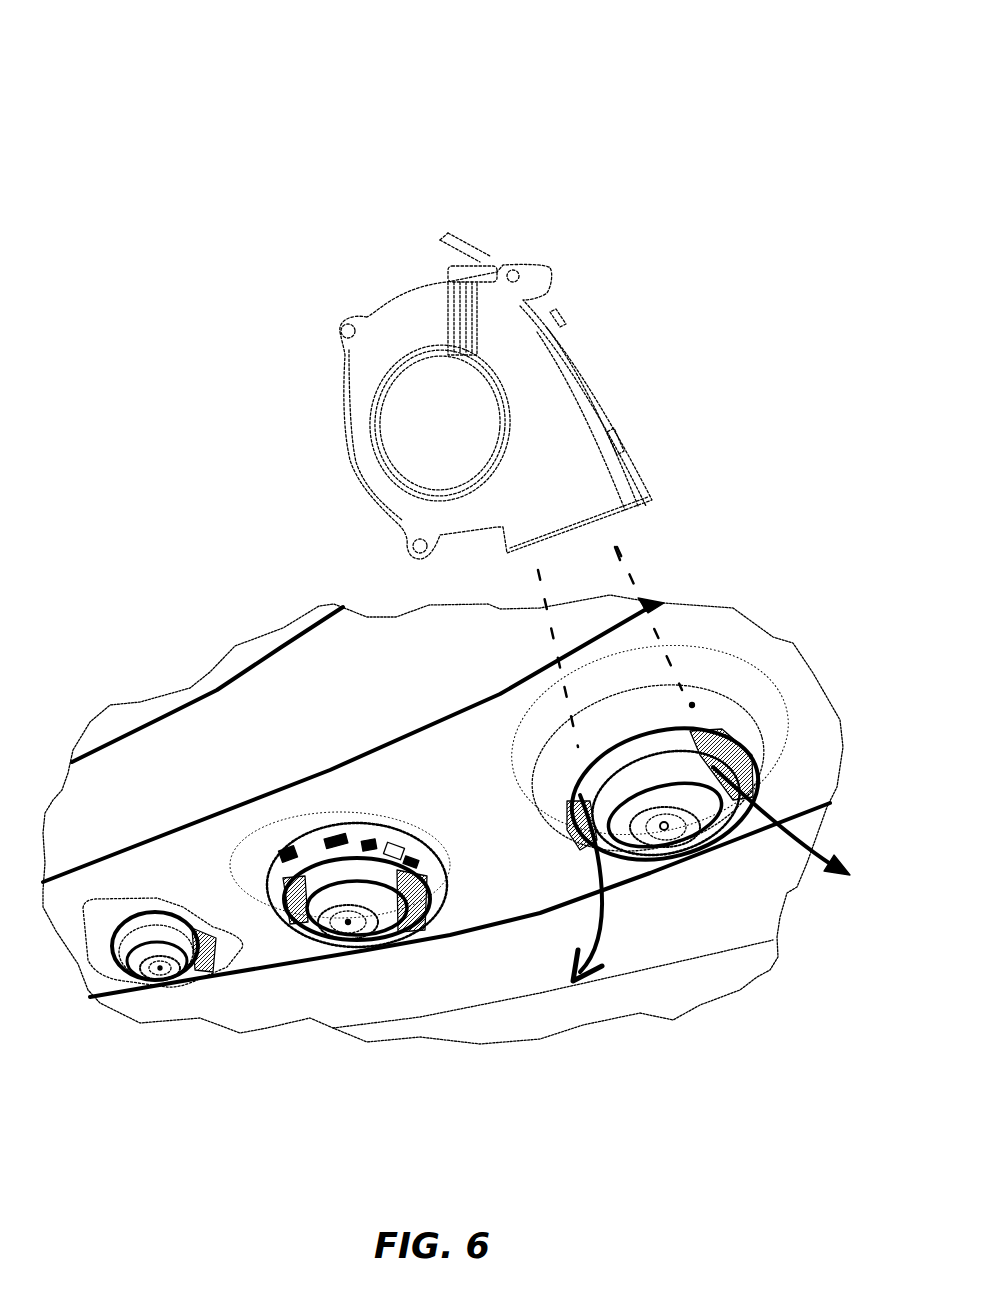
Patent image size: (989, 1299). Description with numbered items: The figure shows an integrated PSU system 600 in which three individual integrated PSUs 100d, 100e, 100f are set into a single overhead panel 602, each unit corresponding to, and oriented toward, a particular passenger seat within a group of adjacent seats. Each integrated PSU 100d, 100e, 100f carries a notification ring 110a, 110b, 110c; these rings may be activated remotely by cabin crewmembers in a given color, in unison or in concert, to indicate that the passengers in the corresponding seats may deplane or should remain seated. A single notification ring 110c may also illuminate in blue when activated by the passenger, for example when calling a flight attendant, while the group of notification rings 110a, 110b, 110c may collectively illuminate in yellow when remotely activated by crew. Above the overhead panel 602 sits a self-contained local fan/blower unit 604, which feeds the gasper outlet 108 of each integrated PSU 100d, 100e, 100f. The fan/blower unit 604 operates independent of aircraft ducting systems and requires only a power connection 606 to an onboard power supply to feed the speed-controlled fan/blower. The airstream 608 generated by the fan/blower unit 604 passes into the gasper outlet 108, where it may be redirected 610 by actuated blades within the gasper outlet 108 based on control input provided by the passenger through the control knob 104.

The integrated PSU system 600 is at (90, 64).
The overhead panel 602 is at (178, 865).
The fan/blower unit 604 is at (642, 327).
The power connection 606 is at (455, 245).
The airstream 608 is at (640, 578).
The redirection of airstream 610 is at (610, 920).
The integrated PSU 100d is at (93, 972).
The integrated PSU 100e is at (368, 975).
The integrated PSU 100f is at (755, 670).
The control knob 104 is at (708, 822).
The gasper outlet 108 is at (697, 757).
The notification ring 110a is at (150, 925).
The notification ring 110b is at (328, 870).
The notification ring 110c is at (710, 740).